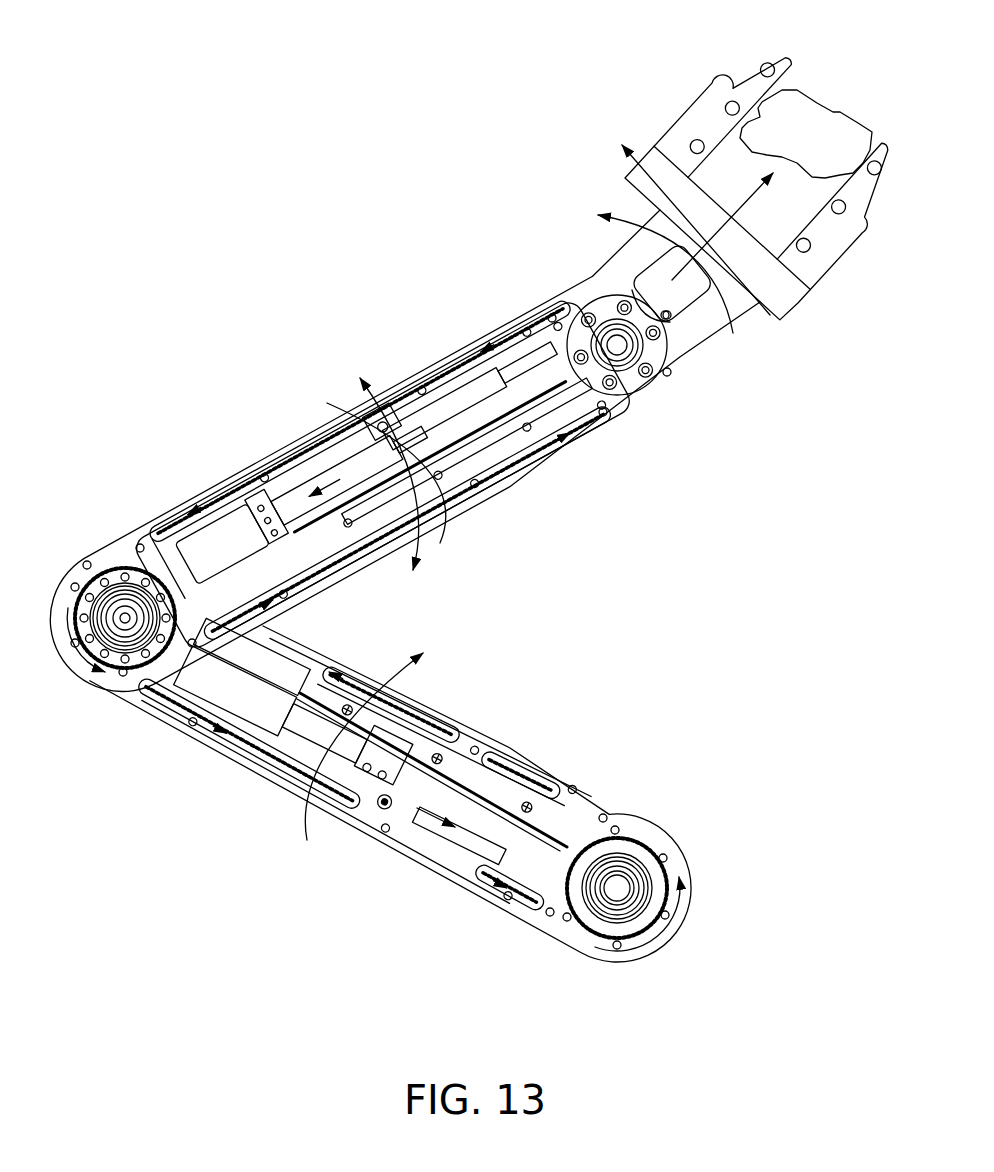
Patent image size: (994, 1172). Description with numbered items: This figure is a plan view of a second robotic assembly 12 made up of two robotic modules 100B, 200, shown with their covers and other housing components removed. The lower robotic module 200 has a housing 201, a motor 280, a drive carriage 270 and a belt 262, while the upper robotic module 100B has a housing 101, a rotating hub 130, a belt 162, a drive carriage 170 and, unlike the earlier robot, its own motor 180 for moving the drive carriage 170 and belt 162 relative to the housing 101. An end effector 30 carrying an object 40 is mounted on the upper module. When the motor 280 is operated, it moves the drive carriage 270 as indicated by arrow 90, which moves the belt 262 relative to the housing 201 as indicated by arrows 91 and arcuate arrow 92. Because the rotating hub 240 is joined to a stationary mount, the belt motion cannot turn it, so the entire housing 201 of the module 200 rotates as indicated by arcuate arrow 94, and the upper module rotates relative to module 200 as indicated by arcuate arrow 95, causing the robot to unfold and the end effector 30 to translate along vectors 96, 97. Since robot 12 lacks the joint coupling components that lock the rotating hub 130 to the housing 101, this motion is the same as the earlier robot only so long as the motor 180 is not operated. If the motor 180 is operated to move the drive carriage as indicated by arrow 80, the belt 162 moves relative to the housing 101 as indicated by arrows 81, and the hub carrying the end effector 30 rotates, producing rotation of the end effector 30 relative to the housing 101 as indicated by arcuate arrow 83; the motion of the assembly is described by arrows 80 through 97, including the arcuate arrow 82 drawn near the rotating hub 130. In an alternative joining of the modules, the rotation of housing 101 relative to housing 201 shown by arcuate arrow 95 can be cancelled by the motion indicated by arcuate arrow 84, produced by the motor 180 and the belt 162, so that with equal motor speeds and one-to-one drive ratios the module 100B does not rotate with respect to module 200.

The robotic assembly 12 is at (187, 75).
The end effector 30 is at (770, 197).
The object 40 is at (815, 147).
The arrow 80 is at (303, 475).
The arrows 81 is at (480, 349).
The first drive sprocket 82 is at (85, 660).
The arcuate arrow 83 is at (721, 297).
The arcuate arrow 84 is at (417, 537).
The arrow 90 is at (427, 808).
The arrows 91 is at (279, 648).
The arcuate arrow 92 is at (658, 935).
The arcuate arrow 94 is at (393, 667).
The arcuate arrow 95 is at (373, 392).
The vector 96 is at (746, 207).
The vector 97 is at (803, 306).
The robotic module 100B is at (356, 242).
The housing 101 is at (437, 357).
The rotating hub 130 is at (122, 603).
The belt 162 is at (517, 458).
The drive carriage 170 is at (330, 430).
The motor 180 is at (232, 563).
The robotic module 200 is at (197, 862).
The housing 201 is at (263, 772).
The rotating hub 240 is at (628, 887).
The belt 262 is at (407, 716).
The drive carriage 270 is at (367, 812).
The motor 280 is at (238, 695).